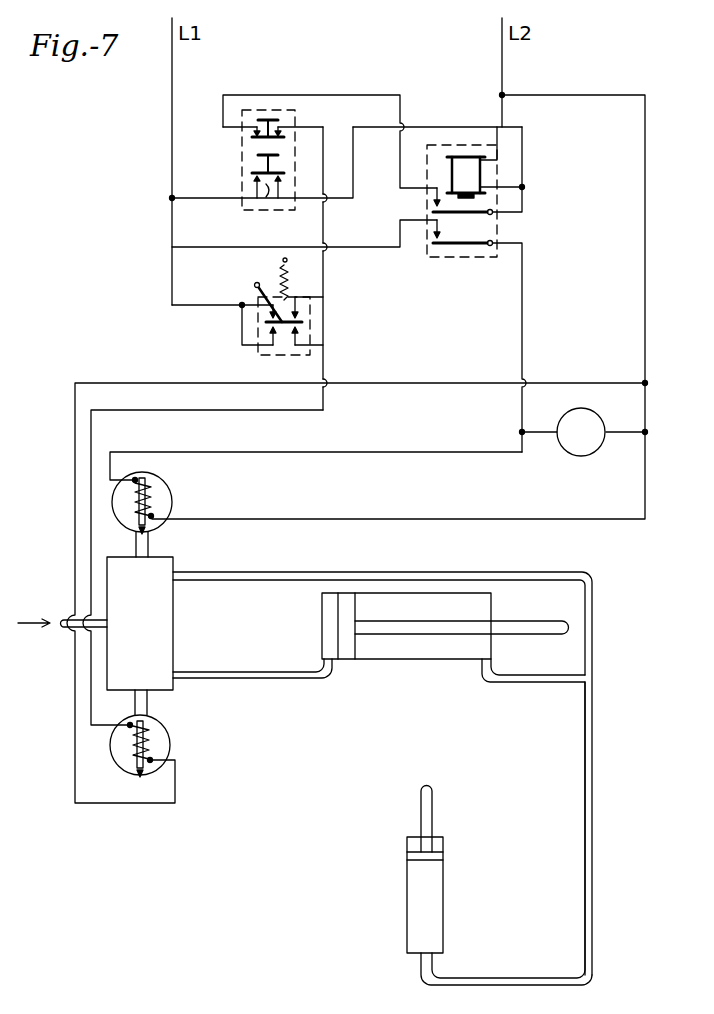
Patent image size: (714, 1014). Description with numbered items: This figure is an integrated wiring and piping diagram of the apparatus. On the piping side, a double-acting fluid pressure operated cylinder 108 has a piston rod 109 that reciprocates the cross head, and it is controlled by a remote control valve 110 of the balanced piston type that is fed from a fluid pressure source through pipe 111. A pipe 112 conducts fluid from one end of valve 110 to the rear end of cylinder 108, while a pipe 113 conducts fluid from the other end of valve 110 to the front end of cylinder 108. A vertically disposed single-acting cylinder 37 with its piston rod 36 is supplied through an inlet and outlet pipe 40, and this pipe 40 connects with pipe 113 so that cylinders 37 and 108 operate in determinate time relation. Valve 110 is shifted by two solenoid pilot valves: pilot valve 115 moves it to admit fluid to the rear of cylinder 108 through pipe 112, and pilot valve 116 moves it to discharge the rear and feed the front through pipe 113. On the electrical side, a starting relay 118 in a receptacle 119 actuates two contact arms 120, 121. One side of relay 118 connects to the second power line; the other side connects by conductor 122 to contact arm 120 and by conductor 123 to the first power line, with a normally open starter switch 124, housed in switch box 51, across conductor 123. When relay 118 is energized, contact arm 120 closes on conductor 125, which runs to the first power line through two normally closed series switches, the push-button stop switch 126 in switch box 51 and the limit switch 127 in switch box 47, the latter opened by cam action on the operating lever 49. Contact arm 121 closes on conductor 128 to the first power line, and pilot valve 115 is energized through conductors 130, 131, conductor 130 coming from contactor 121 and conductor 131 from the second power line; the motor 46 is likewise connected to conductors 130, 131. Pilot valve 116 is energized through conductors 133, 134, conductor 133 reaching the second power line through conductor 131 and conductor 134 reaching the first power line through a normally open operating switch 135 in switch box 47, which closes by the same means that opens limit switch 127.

The piston rod 36 is at (430, 811).
The single-acting fluid pressure operated cylinder 37 is at (432, 903).
The inlet and outlet pipe 40 is at (513, 977).
The motor 46 is at (580, 457).
The switch box 47 is at (312, 326).
The operating lever 49 is at (262, 268).
The switch box 51 is at (241, 162).
The double-acting fluid pressure operated cylinder 108 is at (415, 660).
The piston rod 109 is at (533, 621).
The remote control valve 110 is at (163, 631).
The pipe 111 is at (68, 617).
The pipe 112 is at (265, 680).
The pipe 113 is at (288, 571).
The solenoid-operated pilot valve 115 is at (172, 503).
The solenoid-operated pilot valve 116 is at (172, 752).
The starting coil or relay 118 is at (470, 176).
The receptacle 119 is at (497, 233).
The contact arm 120 is at (437, 211).
The contact arm 121 is at (430, 254).
The conductor 122 is at (522, 203).
The conductor 123 is at (425, 127).
The starter switch 124 is at (262, 204).
The conductor 125 is at (325, 226).
The stop switch 126 is at (250, 133).
The limit switch 127 is at (303, 315).
The conductor 128 is at (291, 247).
The conductor 130 is at (415, 446).
The conductor 131 is at (647, 272).
The conductor 133 is at (75, 468).
The conductor 134 is at (145, 410).
The operating switch 135 is at (283, 336).